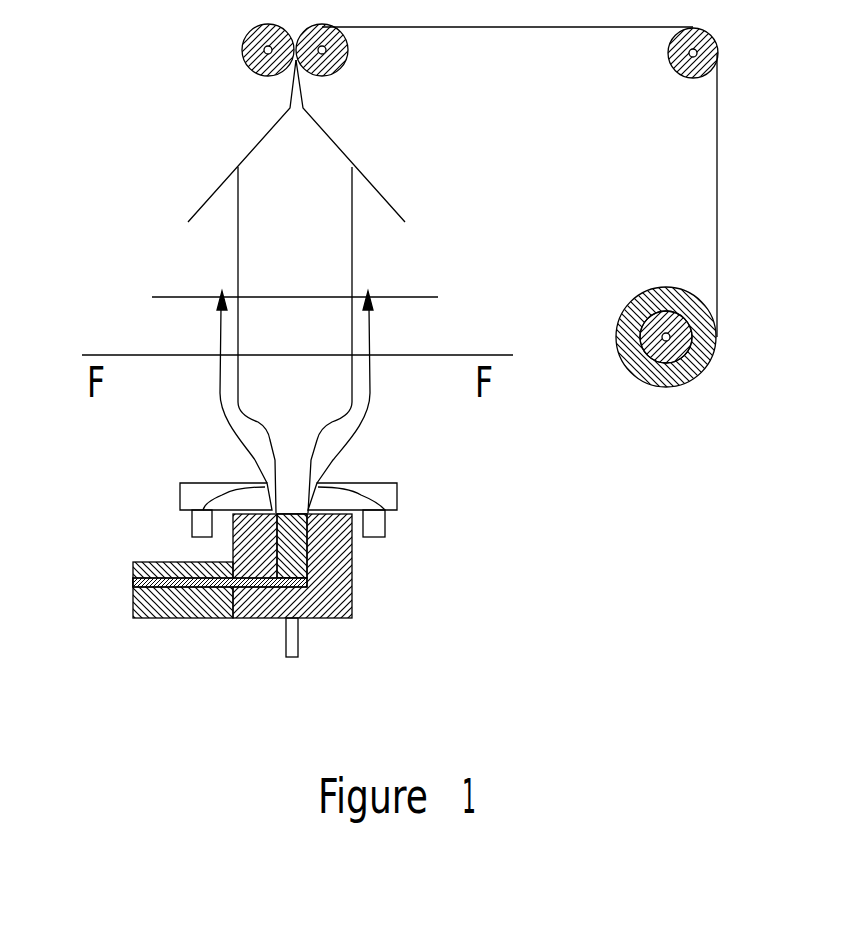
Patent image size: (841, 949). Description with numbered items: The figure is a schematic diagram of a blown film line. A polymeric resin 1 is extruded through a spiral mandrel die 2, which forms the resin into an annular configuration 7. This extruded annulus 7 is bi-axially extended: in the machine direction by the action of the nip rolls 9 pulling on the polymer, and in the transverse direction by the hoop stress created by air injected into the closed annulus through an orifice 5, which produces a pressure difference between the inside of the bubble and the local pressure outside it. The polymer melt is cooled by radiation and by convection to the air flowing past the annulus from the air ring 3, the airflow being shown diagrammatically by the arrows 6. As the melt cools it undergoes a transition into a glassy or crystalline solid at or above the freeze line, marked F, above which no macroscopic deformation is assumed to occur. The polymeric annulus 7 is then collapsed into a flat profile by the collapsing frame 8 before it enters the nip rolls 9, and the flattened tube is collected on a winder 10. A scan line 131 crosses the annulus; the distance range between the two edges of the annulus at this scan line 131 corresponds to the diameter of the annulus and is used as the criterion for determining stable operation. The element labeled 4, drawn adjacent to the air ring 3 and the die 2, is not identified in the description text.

The polymeric resin 1 is at (133, 583).
The spiral mandrel die 2 is at (352, 598).
The air ring 3 is at (387, 522).
The air guide plate 4 is at (178, 487).
The orifice 5 is at (299, 650).
The arrows 6 is at (372, 342).
The annular configuration 7 is at (266, 268).
The collapsing frame 8 is at (370, 178).
The nip rolls 9 is at (245, 42).
The winder 10 is at (690, 385).
The scan line 131 is at (436, 284).